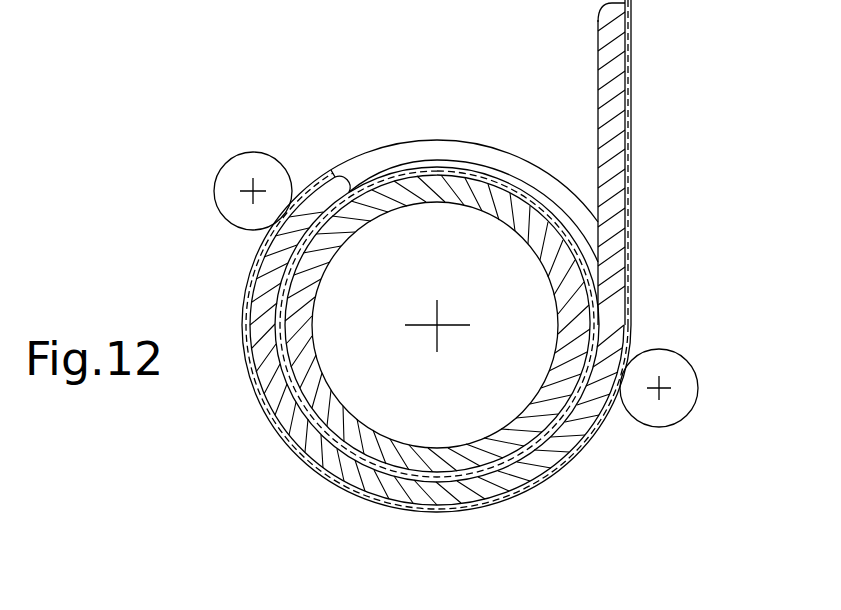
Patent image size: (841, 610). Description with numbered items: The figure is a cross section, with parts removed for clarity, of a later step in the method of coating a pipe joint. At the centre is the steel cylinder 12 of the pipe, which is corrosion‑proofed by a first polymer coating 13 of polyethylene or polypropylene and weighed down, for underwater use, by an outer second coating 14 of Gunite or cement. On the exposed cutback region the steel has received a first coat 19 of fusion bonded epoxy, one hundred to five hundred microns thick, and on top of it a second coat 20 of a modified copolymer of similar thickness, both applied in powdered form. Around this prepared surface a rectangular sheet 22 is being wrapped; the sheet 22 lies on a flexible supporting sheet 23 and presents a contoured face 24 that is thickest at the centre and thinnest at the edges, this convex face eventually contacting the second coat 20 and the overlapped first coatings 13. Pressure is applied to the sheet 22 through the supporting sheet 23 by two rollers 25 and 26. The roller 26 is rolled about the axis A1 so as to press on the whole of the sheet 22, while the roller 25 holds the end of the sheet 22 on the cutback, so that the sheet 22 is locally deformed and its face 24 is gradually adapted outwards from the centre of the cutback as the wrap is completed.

The steel cylinder 12 is at (358, 430).
The first polymer coating 13 is at (413, 163).
The second coating 14 is at (473, 152).
The first coat 19 is at (548, 410).
The second coat 20 is at (280, 292).
The sheet 22 is at (568, 108).
The flexible supporting sheet 23 is at (642, 58).
The contoured face 24 is at (598, 43).
The roller 25 is at (258, 165).
The roller 26 is at (677, 372).
The axis A1 is at (445, 324).